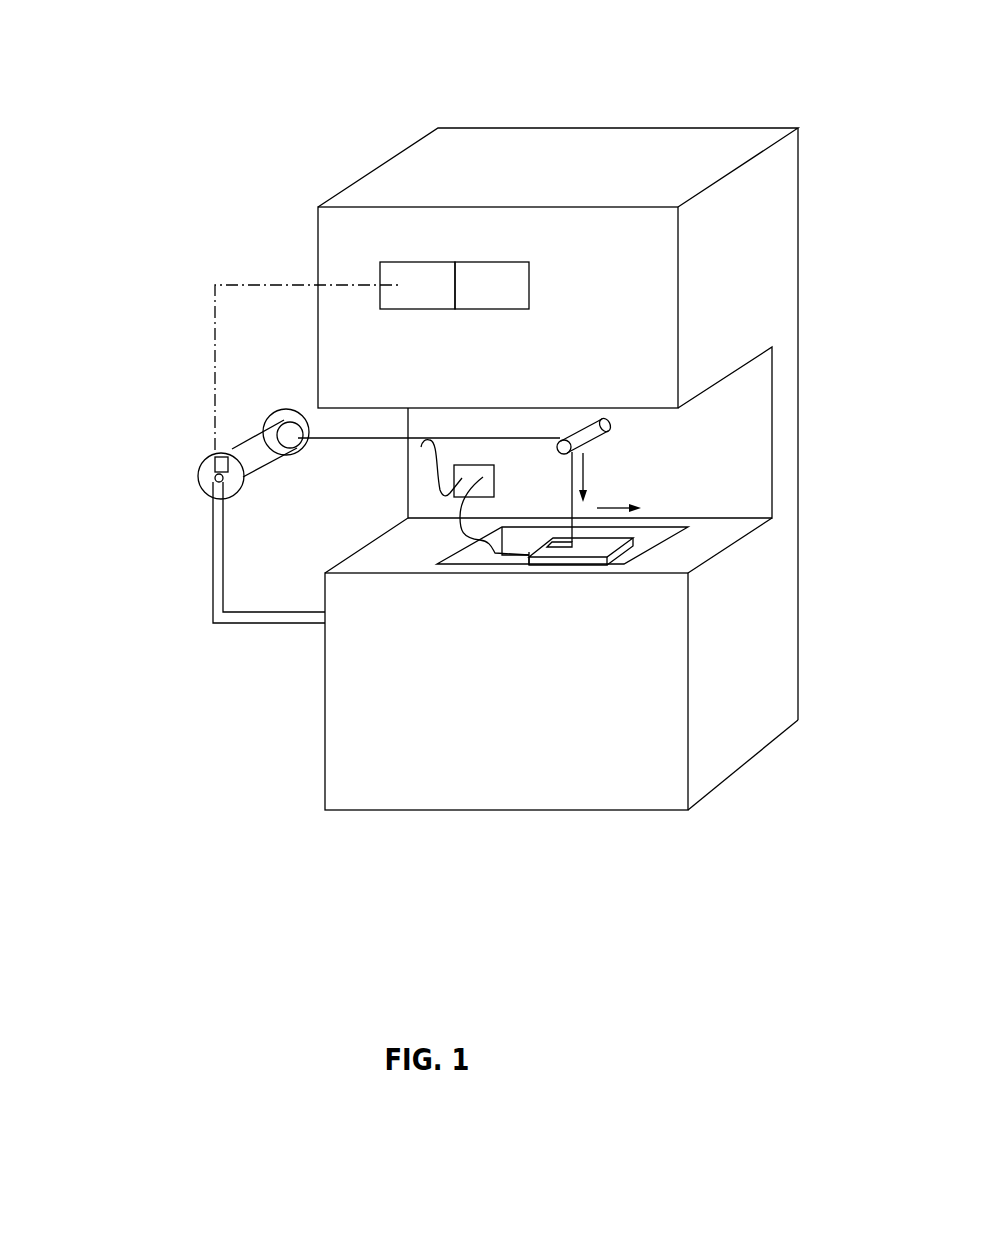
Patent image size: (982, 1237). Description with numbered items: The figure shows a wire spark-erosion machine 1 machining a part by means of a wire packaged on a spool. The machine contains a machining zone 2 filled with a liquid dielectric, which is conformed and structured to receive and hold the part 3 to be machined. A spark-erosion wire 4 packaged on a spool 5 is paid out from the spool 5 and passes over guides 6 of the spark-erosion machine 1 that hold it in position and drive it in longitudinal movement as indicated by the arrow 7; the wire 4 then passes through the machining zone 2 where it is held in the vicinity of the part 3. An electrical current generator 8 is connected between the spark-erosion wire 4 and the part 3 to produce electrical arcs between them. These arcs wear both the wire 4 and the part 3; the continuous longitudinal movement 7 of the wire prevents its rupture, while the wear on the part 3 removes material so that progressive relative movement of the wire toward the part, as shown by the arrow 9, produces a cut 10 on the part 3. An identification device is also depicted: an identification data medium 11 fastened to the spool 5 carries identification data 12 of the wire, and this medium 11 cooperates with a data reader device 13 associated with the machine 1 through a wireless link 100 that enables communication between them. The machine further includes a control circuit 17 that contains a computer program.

The wire spark-erosion machine 1 is at (616, 142).
The machining zone 2 is at (483, 558).
The part to be machined 3 is at (627, 550).
The spark-erosion wire 4 is at (333, 438).
The spool 5 is at (223, 426).
The guides 6 is at (610, 430).
The arrow of longitudinal movement 7 is at (585, 455).
The electrical current generator 8 is at (441, 515).
The arrow of relative movement 9 is at (613, 508).
The cut 10 is at (548, 543).
The identification data medium 11 is at (198, 449).
The identification data 12 is at (217, 472).
The data reader device 13 is at (422, 273).
The control circuit 17 is at (493, 278).
The wireless link 100 is at (213, 317).